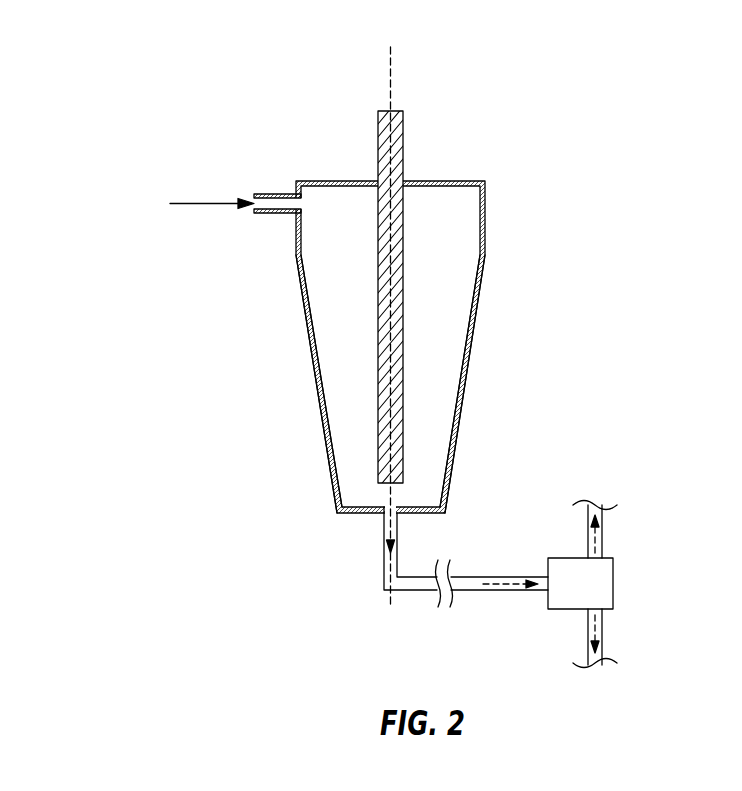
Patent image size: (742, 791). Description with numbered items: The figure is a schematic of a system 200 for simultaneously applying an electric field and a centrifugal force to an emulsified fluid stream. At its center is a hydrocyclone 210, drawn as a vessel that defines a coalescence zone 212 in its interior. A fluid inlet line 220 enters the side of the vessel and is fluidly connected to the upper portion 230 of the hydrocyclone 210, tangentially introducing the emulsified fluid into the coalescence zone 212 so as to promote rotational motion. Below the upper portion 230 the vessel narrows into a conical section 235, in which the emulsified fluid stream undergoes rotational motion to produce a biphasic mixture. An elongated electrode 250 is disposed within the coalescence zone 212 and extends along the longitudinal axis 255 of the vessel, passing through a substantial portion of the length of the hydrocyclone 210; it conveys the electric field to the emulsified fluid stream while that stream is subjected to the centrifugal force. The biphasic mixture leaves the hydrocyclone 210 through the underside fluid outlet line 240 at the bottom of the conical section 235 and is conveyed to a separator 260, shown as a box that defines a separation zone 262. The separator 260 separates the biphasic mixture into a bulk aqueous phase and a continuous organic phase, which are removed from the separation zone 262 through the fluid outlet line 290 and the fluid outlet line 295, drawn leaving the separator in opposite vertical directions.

The system 200 is at (596, 78).
The hydrocyclone 210 is at (313, 180).
The coalescence zone 212 is at (360, 278).
The fluid inlet line 220 is at (212, 203).
The upper portion 230 is at (485, 220).
The conical section 235 is at (463, 380).
The underside fluid outlet line 240 is at (383, 533).
The electrode 250 is at (377, 130).
The longitudinal axis 255 is at (390, 63).
The separator 260 is at (615, 583).
The separation zone 262 is at (602, 596).
The fluid outlet line 290 is at (602, 635).
The fluid outlet line 295 is at (602, 532).